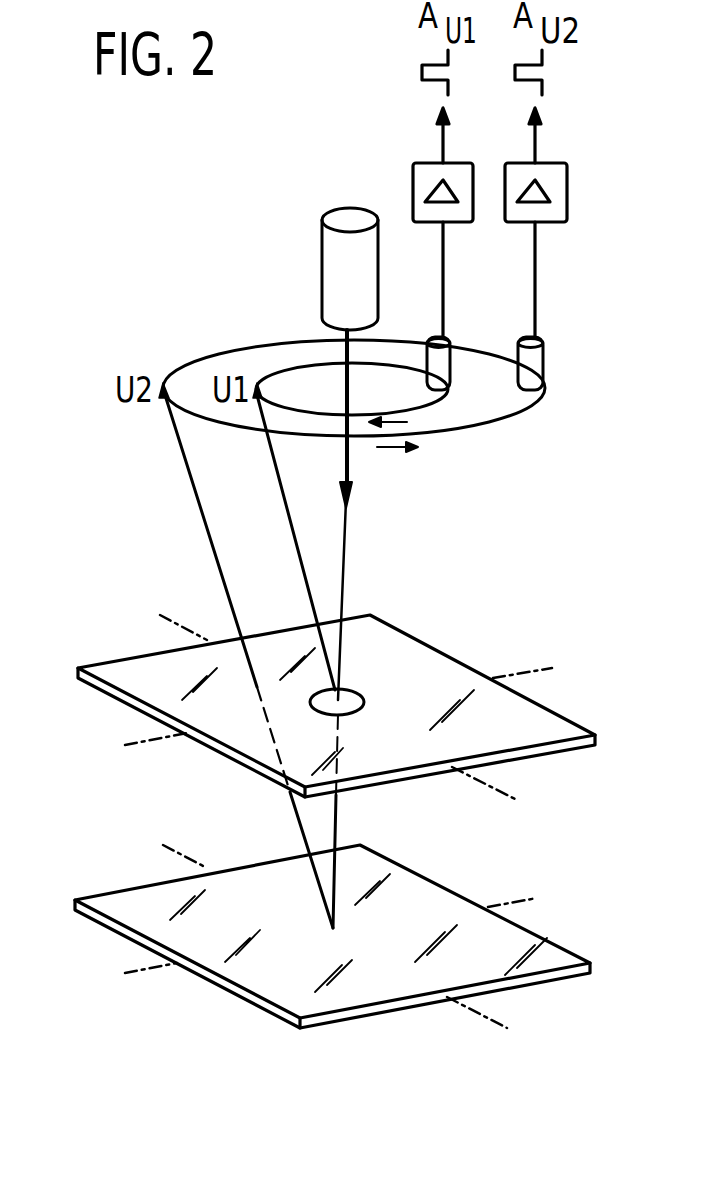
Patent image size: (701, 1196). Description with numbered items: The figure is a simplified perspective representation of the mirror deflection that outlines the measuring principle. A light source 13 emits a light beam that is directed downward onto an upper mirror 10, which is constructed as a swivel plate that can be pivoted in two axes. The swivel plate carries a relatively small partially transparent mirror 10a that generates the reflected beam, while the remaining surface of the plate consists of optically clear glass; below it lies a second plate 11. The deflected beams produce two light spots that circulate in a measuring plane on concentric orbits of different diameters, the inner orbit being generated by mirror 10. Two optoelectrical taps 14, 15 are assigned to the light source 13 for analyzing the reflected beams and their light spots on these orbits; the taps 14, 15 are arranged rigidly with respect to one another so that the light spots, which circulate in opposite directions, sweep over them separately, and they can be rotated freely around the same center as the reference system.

The mirror 10 is at (140, 685).
The partially transparent mirror 10a is at (355, 690).
The substrate plate 11 is at (133, 912).
The light source 13 is at (330, 267).
The optoelectrical tap 14 is at (450, 375).
The optoelectrical tap 15 is at (541, 372).